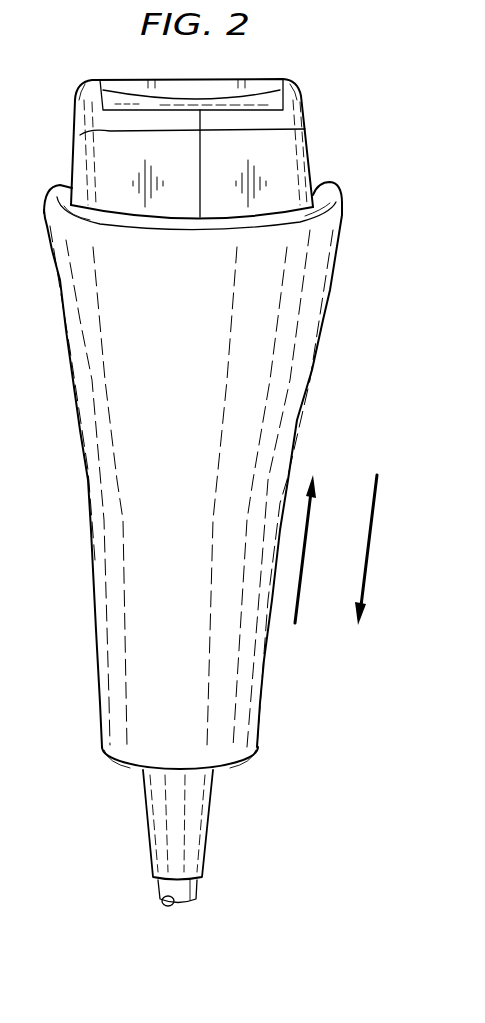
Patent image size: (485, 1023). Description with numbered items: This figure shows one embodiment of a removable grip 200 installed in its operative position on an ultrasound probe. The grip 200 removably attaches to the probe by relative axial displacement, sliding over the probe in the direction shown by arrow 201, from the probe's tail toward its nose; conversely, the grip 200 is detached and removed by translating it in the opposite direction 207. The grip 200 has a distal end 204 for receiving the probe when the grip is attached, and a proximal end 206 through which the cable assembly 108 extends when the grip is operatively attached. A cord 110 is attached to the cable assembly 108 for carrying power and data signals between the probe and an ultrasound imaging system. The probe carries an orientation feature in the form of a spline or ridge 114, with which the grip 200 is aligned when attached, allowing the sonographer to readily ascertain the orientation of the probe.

The grip 200 is at (314, 377).
The ridge 114 is at (68, 182).
The distal end 204 is at (331, 178).
The proximal end 206 is at (275, 722).
The arrow 201 is at (307, 545).
The direction 207 is at (370, 540).
The cable assembly 108 is at (210, 810).
The cord 110 is at (202, 885).